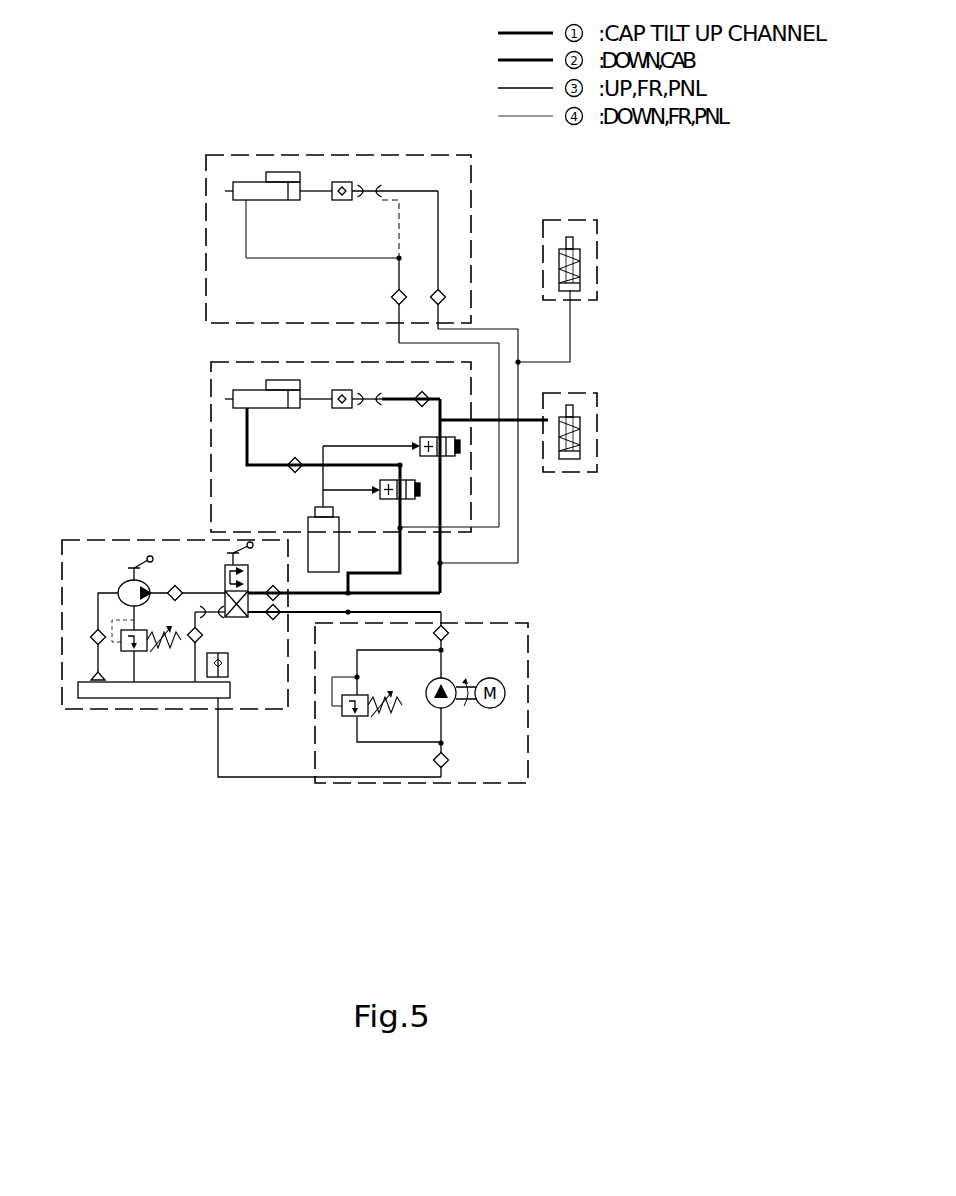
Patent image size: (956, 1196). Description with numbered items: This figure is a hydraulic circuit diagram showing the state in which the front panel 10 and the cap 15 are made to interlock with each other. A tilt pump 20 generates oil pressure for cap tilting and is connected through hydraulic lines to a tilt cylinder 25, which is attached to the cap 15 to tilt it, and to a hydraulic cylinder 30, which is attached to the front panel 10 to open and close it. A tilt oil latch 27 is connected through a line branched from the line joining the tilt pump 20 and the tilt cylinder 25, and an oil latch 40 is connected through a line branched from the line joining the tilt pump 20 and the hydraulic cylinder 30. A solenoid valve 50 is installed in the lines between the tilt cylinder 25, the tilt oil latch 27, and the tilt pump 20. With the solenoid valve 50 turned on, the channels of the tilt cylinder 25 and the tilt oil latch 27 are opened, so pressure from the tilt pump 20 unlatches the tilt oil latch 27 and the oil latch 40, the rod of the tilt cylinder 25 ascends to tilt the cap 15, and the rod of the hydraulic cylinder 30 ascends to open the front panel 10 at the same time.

The front panel 10 is at (472, 155).
The cap 15 is at (211, 362).
The tilt pump 20 is at (62, 540).
The tilt cylinder 25 is at (283, 380).
The tilt oil latch 27 is at (597, 393).
The hydraulic cylinder 30 is at (283, 172).
The oil latch 40 is at (597, 220).
The solenoid valve 50 is at (310, 508).